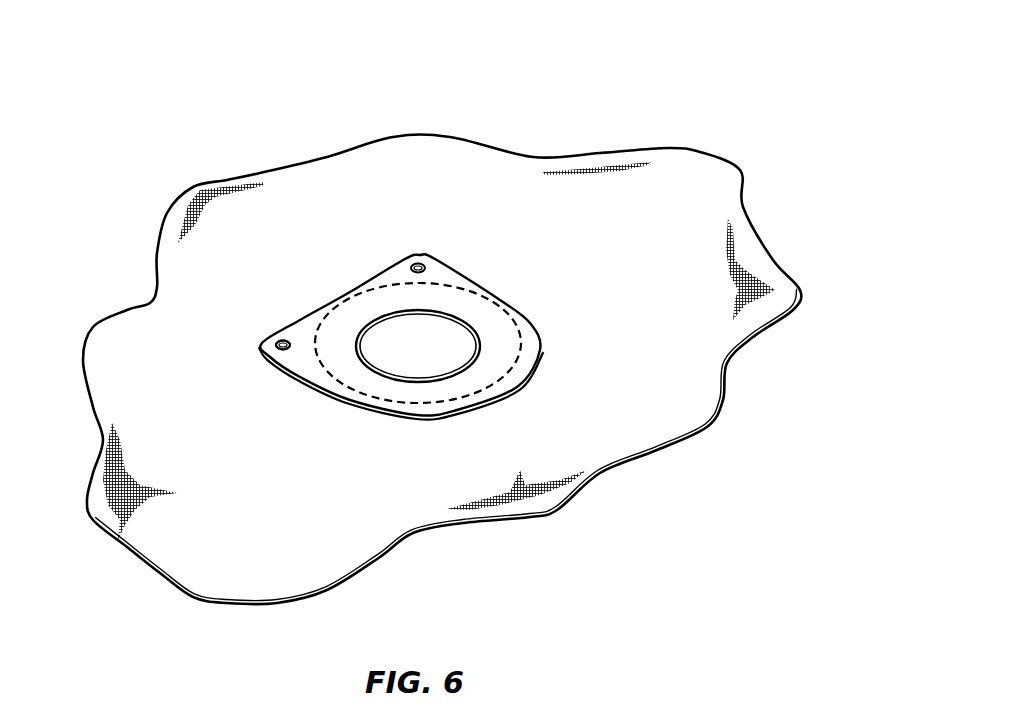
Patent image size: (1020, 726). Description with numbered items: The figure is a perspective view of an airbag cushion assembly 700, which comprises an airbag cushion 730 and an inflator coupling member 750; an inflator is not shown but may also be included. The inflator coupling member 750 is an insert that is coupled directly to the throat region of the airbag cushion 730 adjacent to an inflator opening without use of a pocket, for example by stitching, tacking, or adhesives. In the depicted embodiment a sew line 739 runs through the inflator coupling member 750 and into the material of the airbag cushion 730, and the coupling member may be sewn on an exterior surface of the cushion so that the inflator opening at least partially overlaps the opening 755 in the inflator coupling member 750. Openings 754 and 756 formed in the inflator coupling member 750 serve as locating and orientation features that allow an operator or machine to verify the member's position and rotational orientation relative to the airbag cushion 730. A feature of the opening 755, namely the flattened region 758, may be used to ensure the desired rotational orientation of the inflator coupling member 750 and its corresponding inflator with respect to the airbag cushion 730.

The airbag cushion assembly 700 is at (724, 125).
The airbag cushion 730 is at (673, 240).
The sew line 739 is at (510, 367).
The inflator coupling member 750 is at (456, 274).
The opening 754 is at (283, 336).
The opening 755 is at (453, 342).
The opening 756 is at (418, 258).
The flattened region 758 is at (376, 330).